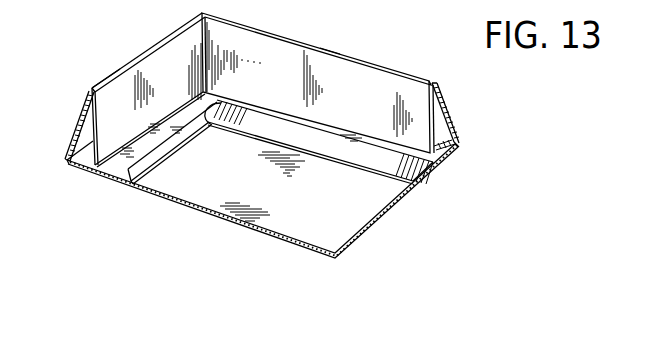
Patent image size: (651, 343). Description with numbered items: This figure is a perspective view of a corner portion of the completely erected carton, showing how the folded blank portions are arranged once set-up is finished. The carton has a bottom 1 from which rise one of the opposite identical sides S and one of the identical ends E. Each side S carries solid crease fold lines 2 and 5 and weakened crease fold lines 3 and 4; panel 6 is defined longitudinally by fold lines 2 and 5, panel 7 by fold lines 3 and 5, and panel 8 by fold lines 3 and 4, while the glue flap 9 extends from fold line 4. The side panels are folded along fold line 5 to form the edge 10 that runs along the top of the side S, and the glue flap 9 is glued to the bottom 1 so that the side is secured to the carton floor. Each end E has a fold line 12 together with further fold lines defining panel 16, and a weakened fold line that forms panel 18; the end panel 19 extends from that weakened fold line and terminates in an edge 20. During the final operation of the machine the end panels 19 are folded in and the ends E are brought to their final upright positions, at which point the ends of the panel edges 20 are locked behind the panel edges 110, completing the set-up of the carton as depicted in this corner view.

The bottom 1 is at (308, 201).
The solid crease fold line 2 is at (455, 144).
The weakened crease fold line 3 is at (430, 168).
The weakened crease fold line 4 is at (457, 149).
The solid crease fold line 5 is at (277, 36).
The panel 6 is at (445, 110).
The panel 7 is at (437, 97).
The panel 8 is at (447, 143).
The glue flap 9 is at (345, 152).
The edge 10 is at (392, 69).
The fold line 12 is at (76, 163).
The panel 16 is at (85, 114).
The panel 18 is at (152, 65).
The end panel 19 is at (148, 153).
The edge 20 is at (177, 147).
The panel edge 110 is at (212, 125).
The end E is at (113, 67).
The side S is at (343, 38).